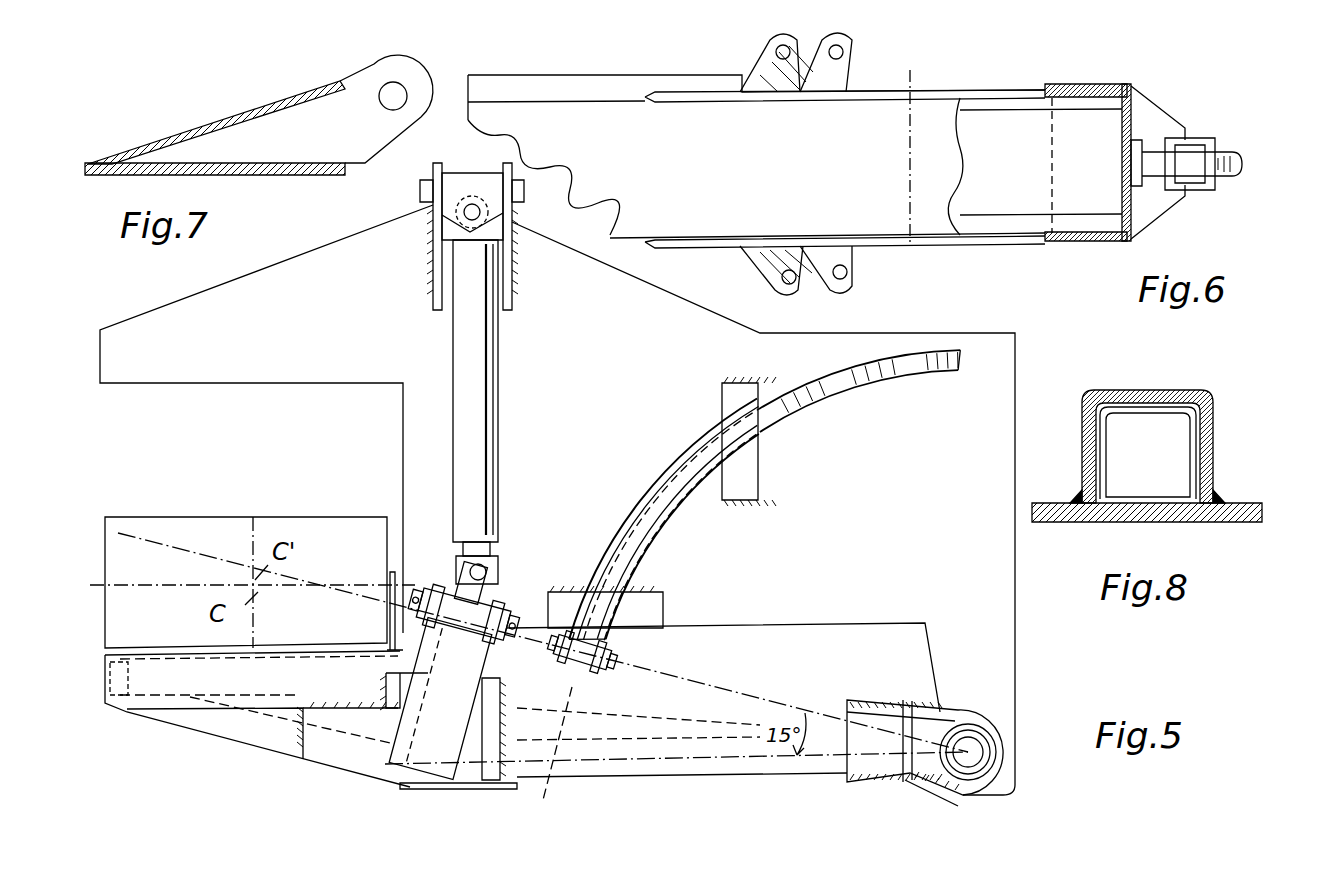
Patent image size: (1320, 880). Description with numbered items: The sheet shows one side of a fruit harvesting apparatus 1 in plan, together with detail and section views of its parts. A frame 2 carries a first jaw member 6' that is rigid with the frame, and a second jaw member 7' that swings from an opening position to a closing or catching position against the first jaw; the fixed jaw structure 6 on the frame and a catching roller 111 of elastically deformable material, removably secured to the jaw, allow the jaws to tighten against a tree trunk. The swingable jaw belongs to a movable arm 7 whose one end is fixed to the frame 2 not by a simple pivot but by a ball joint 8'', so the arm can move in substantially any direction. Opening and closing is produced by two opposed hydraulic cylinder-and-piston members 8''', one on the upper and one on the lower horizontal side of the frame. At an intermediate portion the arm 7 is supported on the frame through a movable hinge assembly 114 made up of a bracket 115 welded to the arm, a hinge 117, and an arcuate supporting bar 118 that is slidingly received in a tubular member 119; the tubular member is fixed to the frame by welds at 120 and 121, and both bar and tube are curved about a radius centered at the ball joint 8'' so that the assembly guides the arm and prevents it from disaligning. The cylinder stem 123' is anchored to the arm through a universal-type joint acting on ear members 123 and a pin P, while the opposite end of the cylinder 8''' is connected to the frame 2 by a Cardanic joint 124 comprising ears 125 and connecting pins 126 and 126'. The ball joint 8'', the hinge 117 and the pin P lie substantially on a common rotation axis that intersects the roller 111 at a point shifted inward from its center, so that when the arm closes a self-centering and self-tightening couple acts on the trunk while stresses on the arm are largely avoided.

In FIG. 5, the apparatus 1 is at (970, 323).
In FIG. 8, the frame 2 is at (1050, 503).
In FIG. 5, the frame 2 is at (1000, 416).
In FIG. 5, the support plate 6 is at (266, 427).
In FIG. 5, the first jaw member 6' is at (320, 236).
In FIG. 7, the movable arm 7 is at (259, 115).
In FIG. 6, the movable arm 7 is at (826, 164).
In FIG. 5, the movable arm 7 is at (257, 727).
In FIG. 5, the second jaw member 7' is at (279, 768).
In FIG. 6, the ball joint 8'' is at (1186, 140).
In FIG. 5, the ball joint 8'' is at (925, 737).
In FIG. 5, the hydraulic cylinder-and-piston member 8''' is at (496, 378).
In FIG. 5, the catching roller 111 is at (190, 520).
In FIG. 5, the movable hinge assembly 114 is at (640, 656).
In FIG. 5, the bracket 115 is at (570, 676).
In FIG. 5, the hinge 117 is at (602, 672).
In FIG. 8, the supporting bar 118 is at (1140, 414).
In FIG. 5, the supporting bar 118 is at (630, 482).
In FIG. 8, the tubular member 119 is at (1115, 392).
In FIG. 5, the tubular member 119 is at (663, 462).
In FIG. 5, the weld 120 is at (722, 404).
In FIG. 8, the weld 121 is at (1210, 496).
In FIG. 5, the weld 121 is at (622, 602).
In FIG. 5, the ear member 123 is at (449, 687).
In FIG. 5, the stem 123' is at (519, 531).
In FIG. 5, the Cardanic joint 124 is at (407, 250).
In FIG. 5, the ear 125 is at (426, 310).
In FIG. 5, the connecting pin 126 is at (545, 217).
In FIG. 5, the connecting pin 126' is at (442, 166).
In FIG. 5, the pin P is at (487, 632).